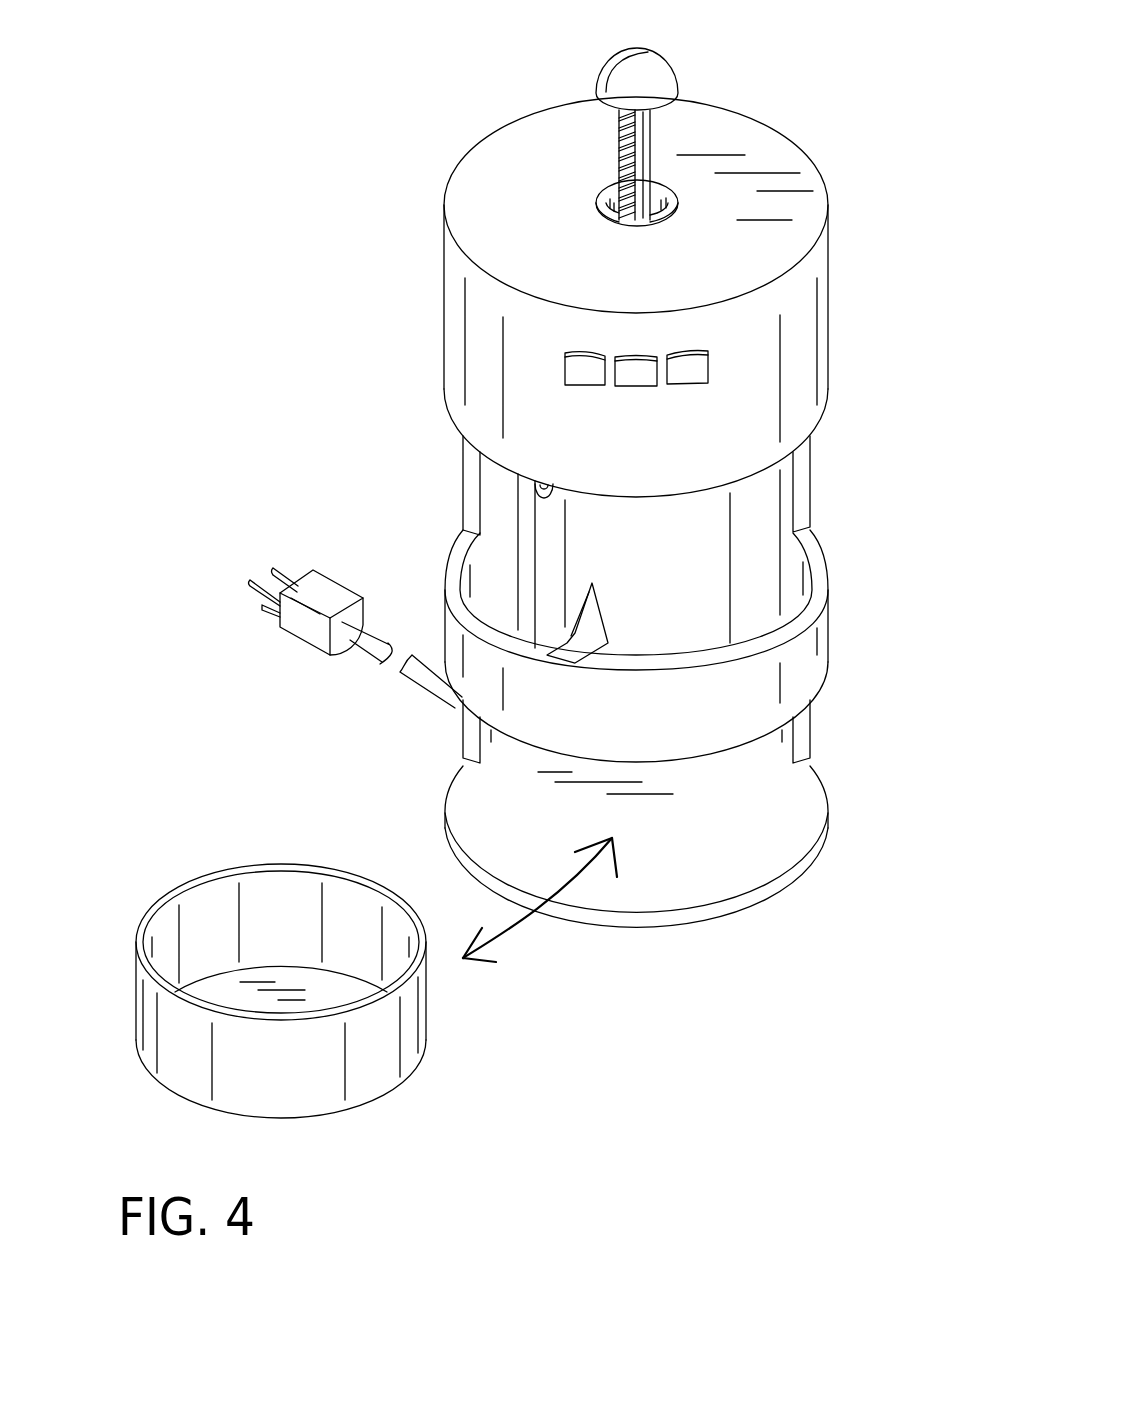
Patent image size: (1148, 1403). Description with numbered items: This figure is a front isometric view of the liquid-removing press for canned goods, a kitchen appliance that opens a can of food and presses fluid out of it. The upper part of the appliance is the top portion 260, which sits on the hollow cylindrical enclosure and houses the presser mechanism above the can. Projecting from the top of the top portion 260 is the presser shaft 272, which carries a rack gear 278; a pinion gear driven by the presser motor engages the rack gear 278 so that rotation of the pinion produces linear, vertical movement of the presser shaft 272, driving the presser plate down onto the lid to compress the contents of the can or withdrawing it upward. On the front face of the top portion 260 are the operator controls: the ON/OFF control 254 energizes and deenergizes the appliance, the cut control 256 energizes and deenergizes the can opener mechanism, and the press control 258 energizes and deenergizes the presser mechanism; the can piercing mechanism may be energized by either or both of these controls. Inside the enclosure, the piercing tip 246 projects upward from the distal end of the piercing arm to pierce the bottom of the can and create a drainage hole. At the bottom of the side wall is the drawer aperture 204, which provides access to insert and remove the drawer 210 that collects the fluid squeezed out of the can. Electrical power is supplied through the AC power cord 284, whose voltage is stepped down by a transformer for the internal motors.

The drawer aperture 204 is at (810, 717).
The drawer 210 is at (142, 997).
The piercing tip 246 is at (602, 612).
The ON/OFF control 254 is at (584, 386).
The cut control 256 is at (636, 387).
The press control 258 is at (695, 385).
The top portion 260 is at (843, 183).
The presser shaft 272 is at (650, 140).
The rack gear 278 is at (622, 157).
The AC power cord 284 is at (382, 635).